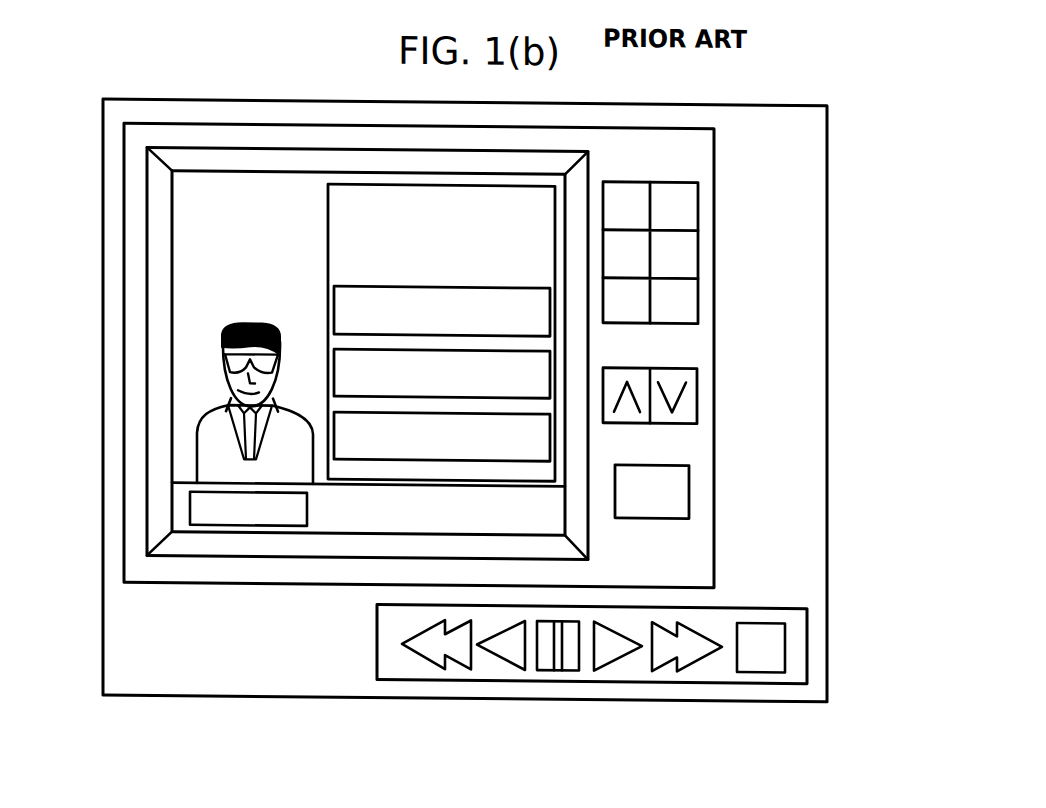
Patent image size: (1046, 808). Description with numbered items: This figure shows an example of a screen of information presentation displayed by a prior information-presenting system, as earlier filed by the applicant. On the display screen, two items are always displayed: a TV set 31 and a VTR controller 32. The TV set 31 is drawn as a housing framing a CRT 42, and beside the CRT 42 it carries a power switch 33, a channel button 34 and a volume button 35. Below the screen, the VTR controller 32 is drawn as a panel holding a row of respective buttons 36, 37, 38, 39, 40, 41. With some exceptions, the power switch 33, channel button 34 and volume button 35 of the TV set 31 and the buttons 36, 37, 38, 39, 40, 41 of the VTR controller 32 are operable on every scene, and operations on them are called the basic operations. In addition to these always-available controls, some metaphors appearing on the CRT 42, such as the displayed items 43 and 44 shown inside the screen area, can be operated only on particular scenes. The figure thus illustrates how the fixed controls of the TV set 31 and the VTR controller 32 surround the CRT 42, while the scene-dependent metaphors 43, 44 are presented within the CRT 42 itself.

The TV set 31 is at (589, 122).
The VTR controller 32 is at (377, 654).
The power switch 33 is at (689, 484).
The channel button 34 is at (698, 247).
The volume button 35 is at (697, 389).
The VTR controller button 36 is at (440, 666).
The VTR controller button 37 is at (508, 666).
The VTR controller button 38 is at (567, 666).
The VTR controller button 39 is at (620, 666).
The VTR controller button 40 is at (690, 666).
The VTR controller button 41 is at (765, 666).
The CRT 42 is at (172, 304).
The announcer image 43 is at (205, 426).
The news headline menu window 44 is at (328, 218).